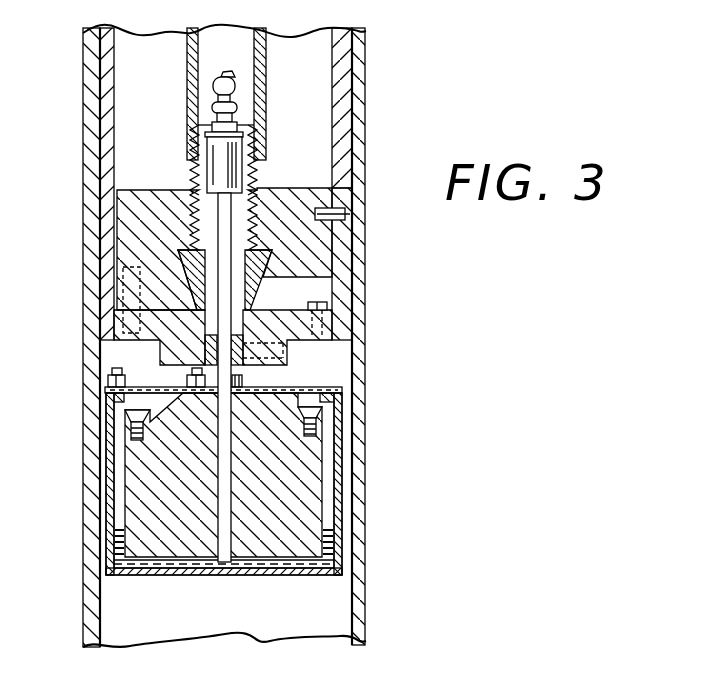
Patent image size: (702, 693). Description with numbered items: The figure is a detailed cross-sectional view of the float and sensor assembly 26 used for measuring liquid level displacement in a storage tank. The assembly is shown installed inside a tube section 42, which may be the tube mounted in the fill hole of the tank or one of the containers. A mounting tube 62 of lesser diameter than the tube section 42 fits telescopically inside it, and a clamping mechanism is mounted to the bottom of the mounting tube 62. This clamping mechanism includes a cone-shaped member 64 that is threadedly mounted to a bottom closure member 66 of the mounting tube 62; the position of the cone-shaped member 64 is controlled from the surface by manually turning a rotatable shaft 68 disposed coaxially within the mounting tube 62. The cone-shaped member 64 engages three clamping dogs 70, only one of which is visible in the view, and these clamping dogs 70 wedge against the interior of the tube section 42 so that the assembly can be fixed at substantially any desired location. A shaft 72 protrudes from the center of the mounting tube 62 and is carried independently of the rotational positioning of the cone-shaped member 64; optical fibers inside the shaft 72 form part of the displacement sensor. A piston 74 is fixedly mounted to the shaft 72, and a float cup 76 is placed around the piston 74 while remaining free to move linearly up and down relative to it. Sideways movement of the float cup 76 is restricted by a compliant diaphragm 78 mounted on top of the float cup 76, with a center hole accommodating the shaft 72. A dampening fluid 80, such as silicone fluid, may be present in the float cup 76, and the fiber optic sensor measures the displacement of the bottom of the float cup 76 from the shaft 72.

The float and sensor assembly 26 is at (78, 190).
The tube section 42 is at (358, 98).
The mounting tube 62 is at (344, 55).
The cone-shaped member 64 is at (258, 288).
The bottom closure member 66 is at (317, 238).
The rotatable shaft 68 is at (190, 53).
The clamping dogs 70 is at (337, 324).
The shaft 72 is at (226, 475).
The piston 74 is at (300, 512).
The float cup 76 is at (338, 550).
The diaphragm 78 is at (305, 387).
The dampening fluid 80 is at (320, 563).